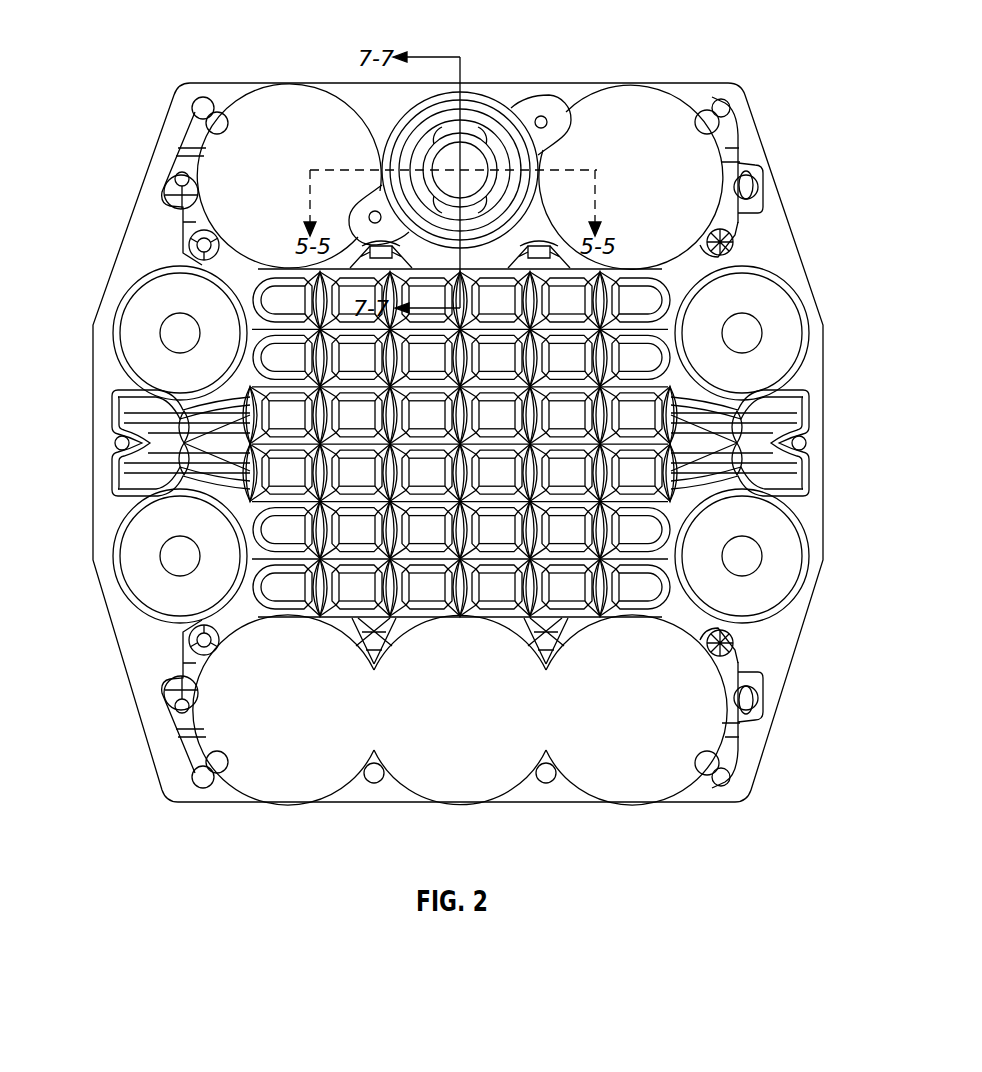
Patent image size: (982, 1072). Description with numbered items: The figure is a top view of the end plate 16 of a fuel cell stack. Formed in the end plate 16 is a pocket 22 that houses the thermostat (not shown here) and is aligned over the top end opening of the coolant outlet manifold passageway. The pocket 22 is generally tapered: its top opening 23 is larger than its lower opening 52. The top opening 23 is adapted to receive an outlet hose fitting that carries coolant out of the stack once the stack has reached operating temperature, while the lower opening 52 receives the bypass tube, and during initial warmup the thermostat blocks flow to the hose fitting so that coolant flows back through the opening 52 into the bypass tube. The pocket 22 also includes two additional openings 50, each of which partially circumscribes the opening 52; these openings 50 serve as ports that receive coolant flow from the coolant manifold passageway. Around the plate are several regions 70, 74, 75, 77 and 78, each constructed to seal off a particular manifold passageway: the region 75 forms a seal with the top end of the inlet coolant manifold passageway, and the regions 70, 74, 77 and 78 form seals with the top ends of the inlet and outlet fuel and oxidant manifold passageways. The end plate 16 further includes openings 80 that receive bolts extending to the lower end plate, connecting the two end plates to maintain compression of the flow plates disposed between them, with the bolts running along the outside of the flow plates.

The end plate 16 is at (782, 195).
The pocket 22 is at (469, 130).
The top opening 23 is at (473, 95).
The openings 50 is at (423, 140).
The lower opening 52 is at (480, 157).
The region 70 is at (300, 190).
The region 78 is at (628, 193).
The openings 80 is at (180, 332).
The region 74 is at (290, 720).
The region 75 is at (468, 720).
The region 77 is at (637, 720).